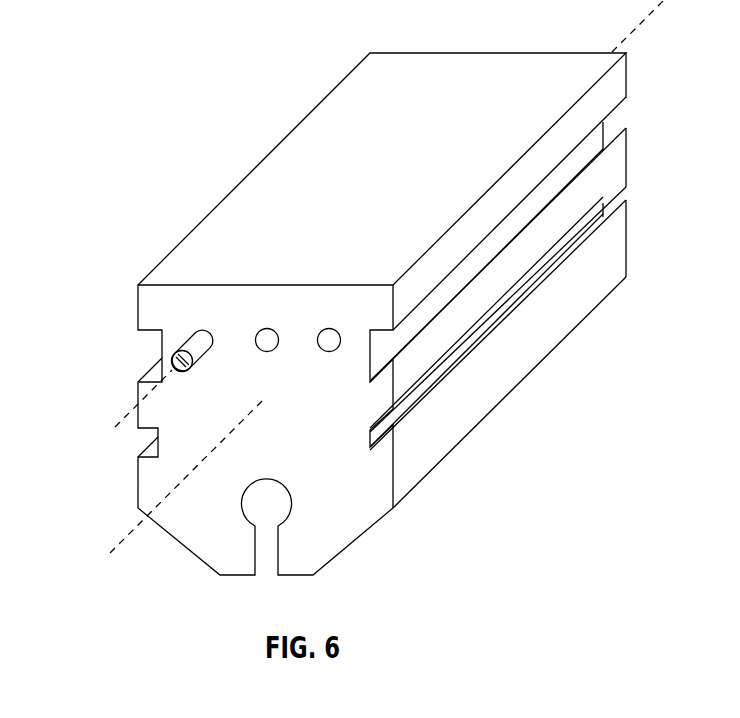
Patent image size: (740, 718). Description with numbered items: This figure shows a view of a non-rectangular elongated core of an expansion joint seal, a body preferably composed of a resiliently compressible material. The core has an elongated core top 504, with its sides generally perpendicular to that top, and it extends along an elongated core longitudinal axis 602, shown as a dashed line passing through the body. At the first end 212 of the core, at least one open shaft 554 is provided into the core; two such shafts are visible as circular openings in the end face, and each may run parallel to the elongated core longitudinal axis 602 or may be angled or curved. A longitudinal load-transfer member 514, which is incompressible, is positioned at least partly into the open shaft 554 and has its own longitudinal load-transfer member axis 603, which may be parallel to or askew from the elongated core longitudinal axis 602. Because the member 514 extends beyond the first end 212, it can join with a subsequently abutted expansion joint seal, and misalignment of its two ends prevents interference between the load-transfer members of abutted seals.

The elongated core top 504 is at (313, 157).
The longitudinal load-transfer member 514 is at (192, 336).
The open shaft 554 is at (329, 328).
The longitudinal load-transfer member axis 603 is at (133, 413).
The elongated core longitudinal axis 602 is at (132, 533).
The first end 212 is at (337, 522).